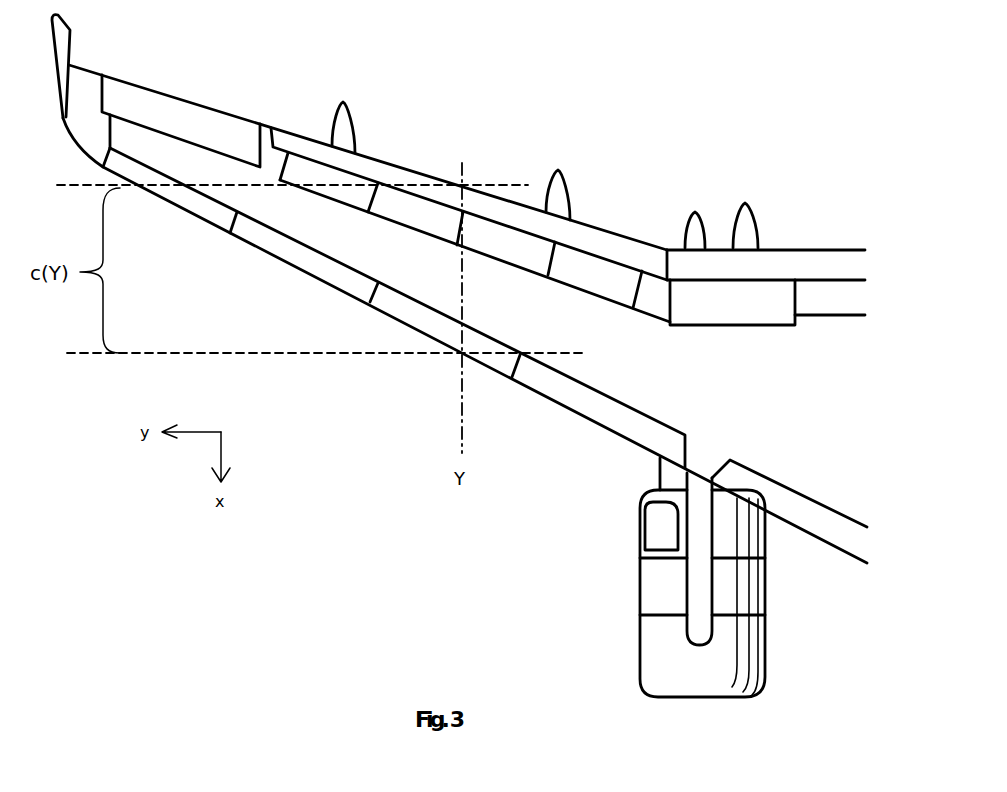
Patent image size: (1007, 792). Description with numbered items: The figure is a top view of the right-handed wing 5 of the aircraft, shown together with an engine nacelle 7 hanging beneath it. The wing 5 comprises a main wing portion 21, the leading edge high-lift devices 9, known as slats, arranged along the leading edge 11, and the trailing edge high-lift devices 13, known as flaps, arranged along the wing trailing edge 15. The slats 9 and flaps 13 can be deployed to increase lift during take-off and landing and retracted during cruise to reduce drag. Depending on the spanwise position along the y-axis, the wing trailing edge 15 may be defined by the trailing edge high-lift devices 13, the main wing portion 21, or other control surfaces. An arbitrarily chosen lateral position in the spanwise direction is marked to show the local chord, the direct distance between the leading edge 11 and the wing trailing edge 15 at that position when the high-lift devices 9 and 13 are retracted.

The wing 5 is at (628, 112).
The engine nacelle 7 is at (667, 650).
The leading edge high-lift devices 9 is at (393, 307).
The leading edge 11 is at (460, 357).
The trailing edge high-lift devices 13 is at (380, 170).
The wing trailing edge 15 is at (463, 185).
The main wing portion 21 is at (615, 330).